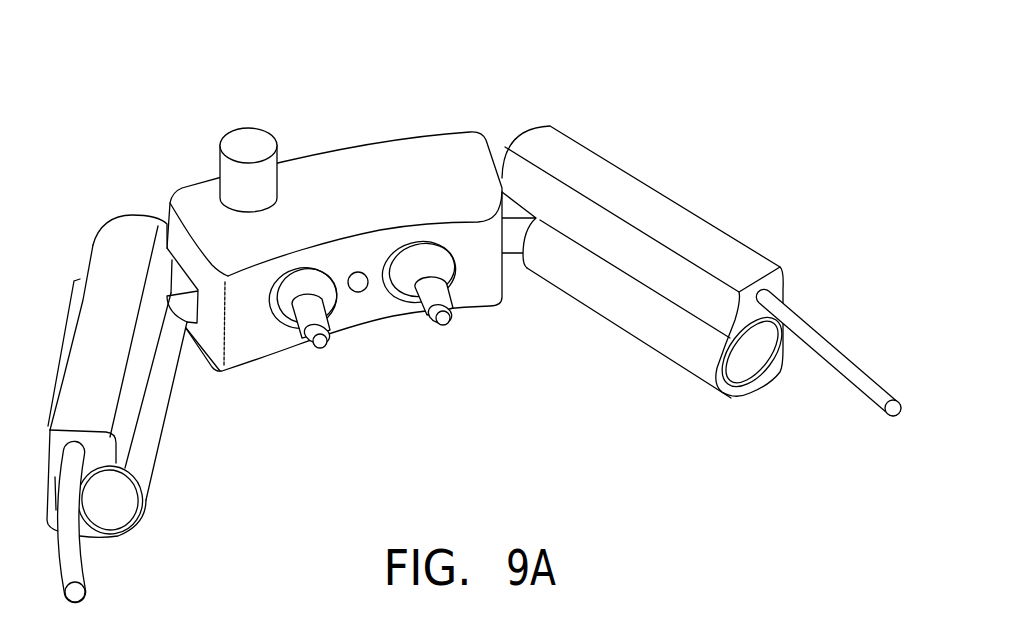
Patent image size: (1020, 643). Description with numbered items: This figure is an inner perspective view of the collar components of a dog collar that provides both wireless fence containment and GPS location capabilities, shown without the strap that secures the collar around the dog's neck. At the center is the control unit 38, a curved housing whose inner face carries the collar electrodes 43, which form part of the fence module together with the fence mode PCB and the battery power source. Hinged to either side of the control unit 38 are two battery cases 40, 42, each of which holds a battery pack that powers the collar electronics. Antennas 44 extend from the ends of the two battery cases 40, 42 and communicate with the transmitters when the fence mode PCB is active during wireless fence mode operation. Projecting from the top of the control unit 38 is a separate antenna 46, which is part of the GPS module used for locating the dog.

The control unit 38 is at (387, 143).
The battery case 40 is at (764, 258).
The battery case 42 is at (167, 412).
The collar electrodes 43 is at (325, 347).
The antennas 44 is at (867, 386).
The antenna 46 is at (241, 127).